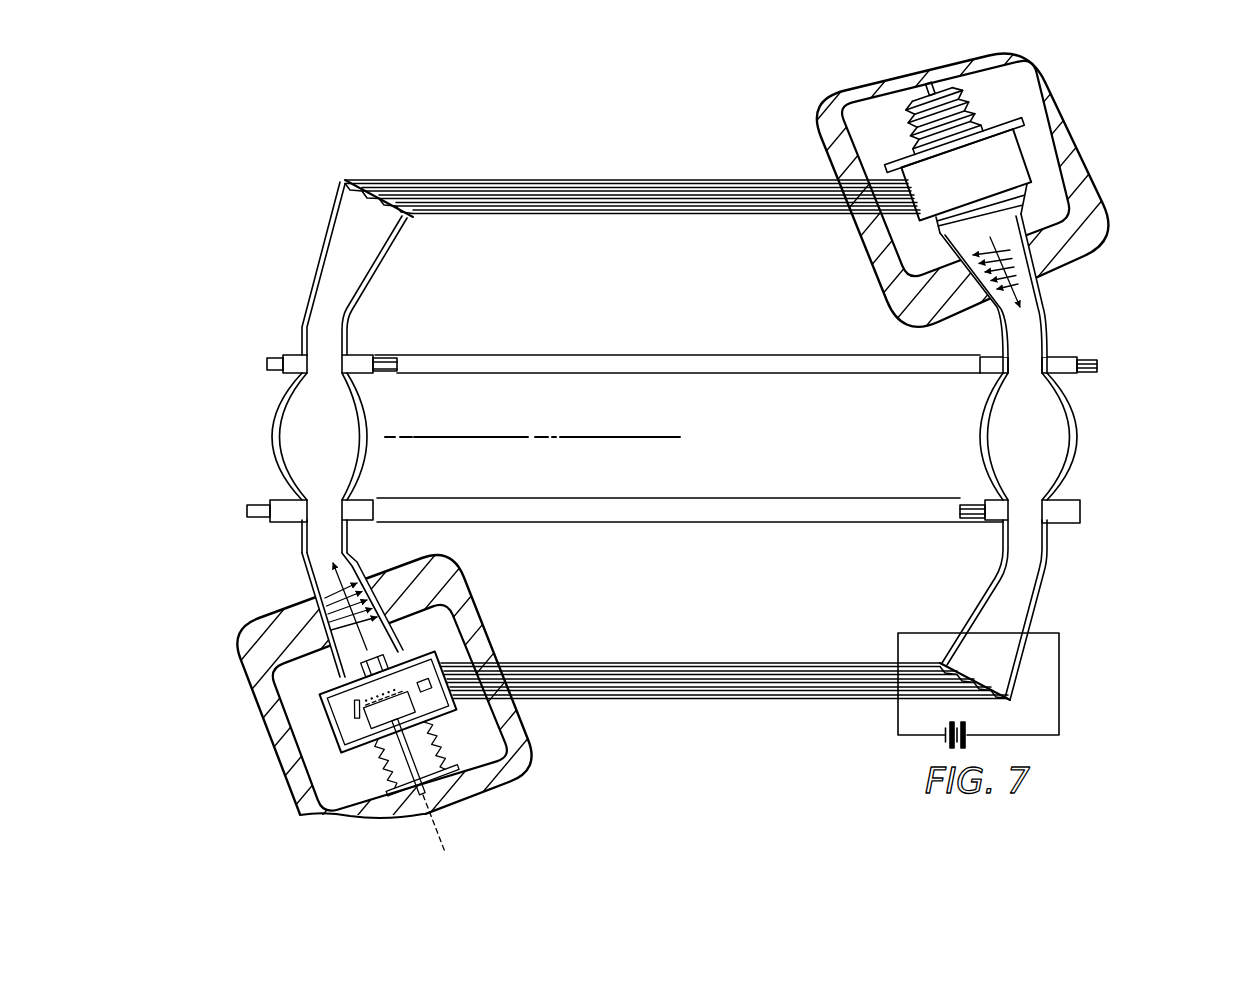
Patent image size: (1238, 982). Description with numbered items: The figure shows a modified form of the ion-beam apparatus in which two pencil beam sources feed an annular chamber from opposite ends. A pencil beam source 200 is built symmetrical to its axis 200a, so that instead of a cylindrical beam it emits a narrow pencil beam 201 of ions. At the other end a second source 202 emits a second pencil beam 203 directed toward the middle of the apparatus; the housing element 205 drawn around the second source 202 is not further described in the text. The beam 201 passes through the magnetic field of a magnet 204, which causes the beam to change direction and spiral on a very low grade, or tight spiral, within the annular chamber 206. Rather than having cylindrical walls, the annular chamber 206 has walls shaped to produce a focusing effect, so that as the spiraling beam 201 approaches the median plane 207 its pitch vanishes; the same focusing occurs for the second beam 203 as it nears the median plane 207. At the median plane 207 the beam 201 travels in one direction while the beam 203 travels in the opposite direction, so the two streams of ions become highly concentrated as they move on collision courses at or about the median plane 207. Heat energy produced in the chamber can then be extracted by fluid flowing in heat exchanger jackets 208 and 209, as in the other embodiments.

The pencil beam source 200 is at (323, 685).
The axis 200a is at (440, 831).
The pencil beam 201 is at (355, 560).
The second source 202 is at (984, 181).
The second pencil beam 203 is at (1028, 276).
The magnet 204 is at (523, 768).
The collector housing block 205 is at (1073, 170).
The annular chamber 206 is at (327, 423).
The median plane 207 is at (447, 437).
The heat exchanger jacket 208 is at (1080, 508).
The heat exchanger jacket 209 is at (989, 520).